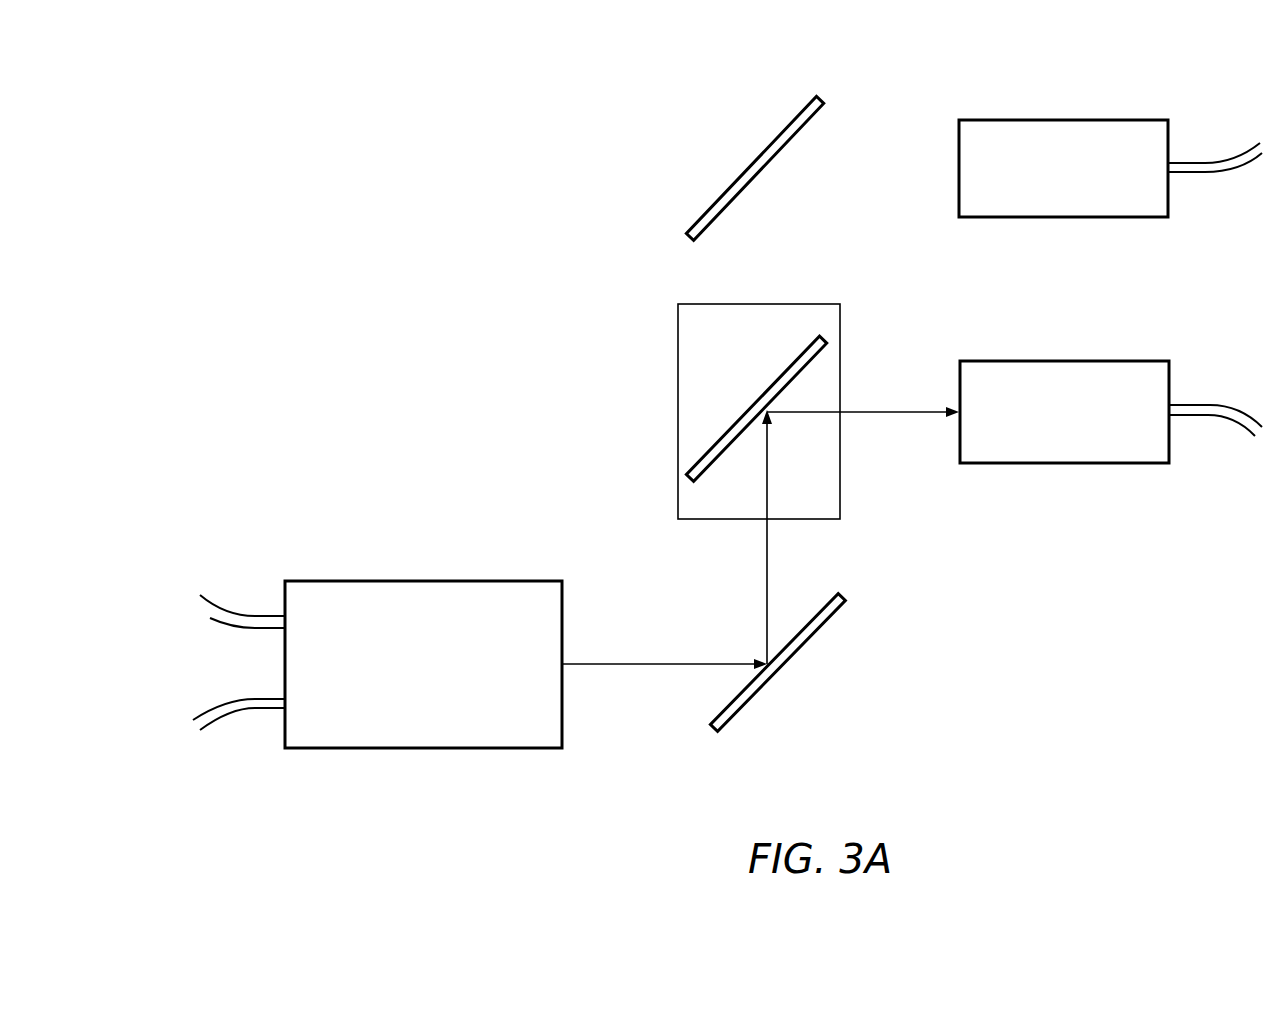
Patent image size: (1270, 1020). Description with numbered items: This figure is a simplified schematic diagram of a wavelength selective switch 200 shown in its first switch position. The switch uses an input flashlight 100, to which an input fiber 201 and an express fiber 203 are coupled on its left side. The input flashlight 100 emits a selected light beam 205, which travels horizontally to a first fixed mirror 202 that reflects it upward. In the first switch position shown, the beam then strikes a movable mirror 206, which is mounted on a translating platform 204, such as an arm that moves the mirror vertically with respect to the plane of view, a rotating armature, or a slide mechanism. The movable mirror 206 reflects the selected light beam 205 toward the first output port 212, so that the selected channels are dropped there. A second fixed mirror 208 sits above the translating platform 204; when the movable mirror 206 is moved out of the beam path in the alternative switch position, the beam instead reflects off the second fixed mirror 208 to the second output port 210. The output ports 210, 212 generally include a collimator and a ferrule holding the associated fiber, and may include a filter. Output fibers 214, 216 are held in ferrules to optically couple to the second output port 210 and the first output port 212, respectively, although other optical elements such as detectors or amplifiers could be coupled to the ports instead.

The wavelength selective switch 200 is at (376, 148).
The input flashlight 100 is at (430, 580).
The input fiber 201 is at (213, 622).
The express fiber 203 is at (240, 713).
The selected light beam 205 is at (627, 664).
The first fixed mirror 202 is at (755, 696).
The translating platform 204 is at (840, 476).
The movable mirror 206 is at (757, 407).
The second fixed mirror 208 is at (752, 163).
The second output port 210 is at (1065, 118).
The output fiber 214 is at (1200, 176).
The first output port 212 is at (1065, 360).
The output fiber 216 is at (1210, 400).